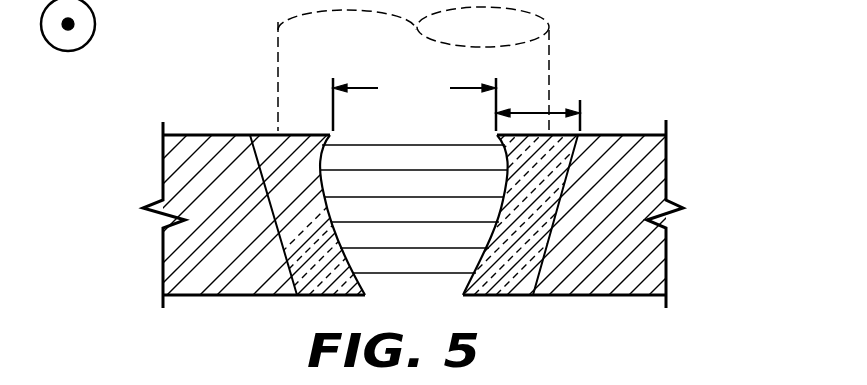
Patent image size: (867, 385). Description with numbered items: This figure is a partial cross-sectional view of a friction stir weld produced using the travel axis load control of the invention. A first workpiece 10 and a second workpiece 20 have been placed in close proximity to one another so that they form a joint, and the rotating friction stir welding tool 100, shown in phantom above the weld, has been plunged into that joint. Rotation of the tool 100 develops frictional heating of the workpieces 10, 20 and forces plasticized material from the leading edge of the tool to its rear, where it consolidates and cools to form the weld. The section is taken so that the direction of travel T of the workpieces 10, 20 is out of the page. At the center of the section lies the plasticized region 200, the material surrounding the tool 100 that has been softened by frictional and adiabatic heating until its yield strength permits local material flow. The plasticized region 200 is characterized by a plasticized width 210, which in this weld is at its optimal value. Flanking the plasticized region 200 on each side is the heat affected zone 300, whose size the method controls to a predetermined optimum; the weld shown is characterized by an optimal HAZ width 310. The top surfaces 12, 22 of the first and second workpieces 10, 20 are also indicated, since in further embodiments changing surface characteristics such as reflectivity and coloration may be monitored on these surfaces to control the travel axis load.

The first workpiece 10 is at (160, 203).
The top surface of the first workpiece 12 is at (200, 135).
The second workpiece 20 is at (677, 198).
The top surface of the second workpiece 22 is at (622, 132).
The friction stir welding tool 100 is at (278, 22).
The direction of travel T is at (88, 44).
The plasticized region 200 is at (443, 228).
The plasticized width 210 is at (414, 94).
The heat affected zone 300 is at (325, 295).
The HAZ width 310 is at (517, 113).